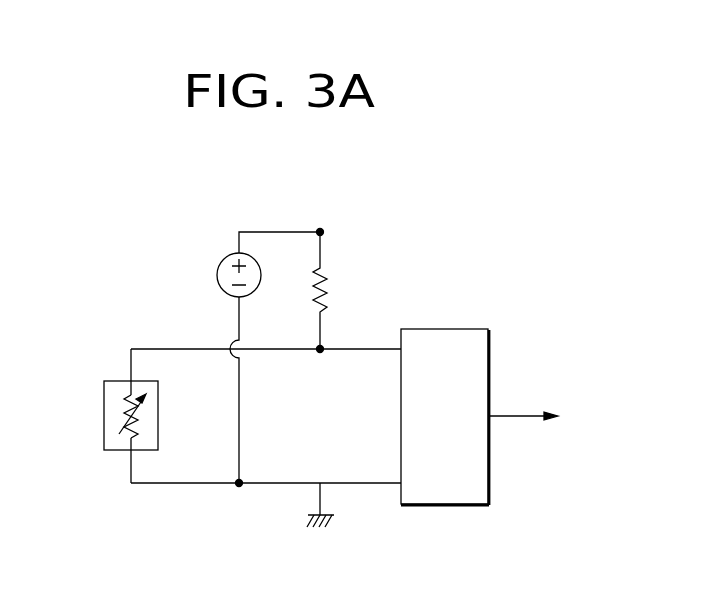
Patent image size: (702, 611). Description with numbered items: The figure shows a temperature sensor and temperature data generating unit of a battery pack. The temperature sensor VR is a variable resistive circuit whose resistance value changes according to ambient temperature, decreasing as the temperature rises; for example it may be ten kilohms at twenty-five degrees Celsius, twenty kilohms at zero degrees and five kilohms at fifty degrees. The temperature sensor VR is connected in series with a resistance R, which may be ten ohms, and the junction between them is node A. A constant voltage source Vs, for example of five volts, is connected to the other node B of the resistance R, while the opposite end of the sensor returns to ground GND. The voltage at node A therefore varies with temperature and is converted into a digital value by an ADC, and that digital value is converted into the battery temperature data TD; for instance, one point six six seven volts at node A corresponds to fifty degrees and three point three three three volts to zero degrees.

The constant voltage source Vs is at (251, 264).
The node B is at (331, 232).
The resistance R is at (330, 290).
The node A is at (320, 365).
The temperature sensor VR is at (115, 415).
The element ADC is at (445, 417).
The battery temperature data TD is at (523, 404).
The ground GND is at (321, 520).